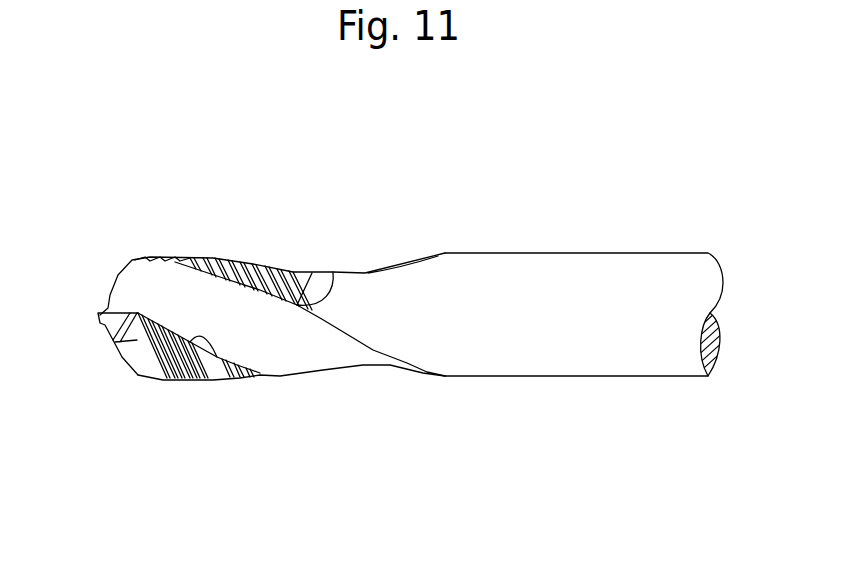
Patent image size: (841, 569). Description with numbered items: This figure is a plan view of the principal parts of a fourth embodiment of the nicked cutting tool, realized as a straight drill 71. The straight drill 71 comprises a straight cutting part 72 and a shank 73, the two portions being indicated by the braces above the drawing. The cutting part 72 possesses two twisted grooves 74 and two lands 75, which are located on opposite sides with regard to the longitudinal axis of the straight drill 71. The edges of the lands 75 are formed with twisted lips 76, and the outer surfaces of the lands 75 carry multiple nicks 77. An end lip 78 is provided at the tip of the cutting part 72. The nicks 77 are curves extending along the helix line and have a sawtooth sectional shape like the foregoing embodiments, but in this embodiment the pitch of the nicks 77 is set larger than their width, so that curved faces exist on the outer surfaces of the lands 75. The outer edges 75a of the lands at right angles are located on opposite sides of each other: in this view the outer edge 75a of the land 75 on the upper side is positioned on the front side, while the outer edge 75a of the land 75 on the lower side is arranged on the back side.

The straight drill 71 is at (524, 427).
The straight cutting part 72 is at (406, 150).
The shank 73 is at (733, 150).
The twisted groove 74 is at (405, 263).
The land 75 is at (336, 271).
The outer edge of the land 75a is at (275, 267).
The twisted lip 76 is at (212, 352).
The nick 77 is at (250, 262).
The end lip 78 is at (104, 313).